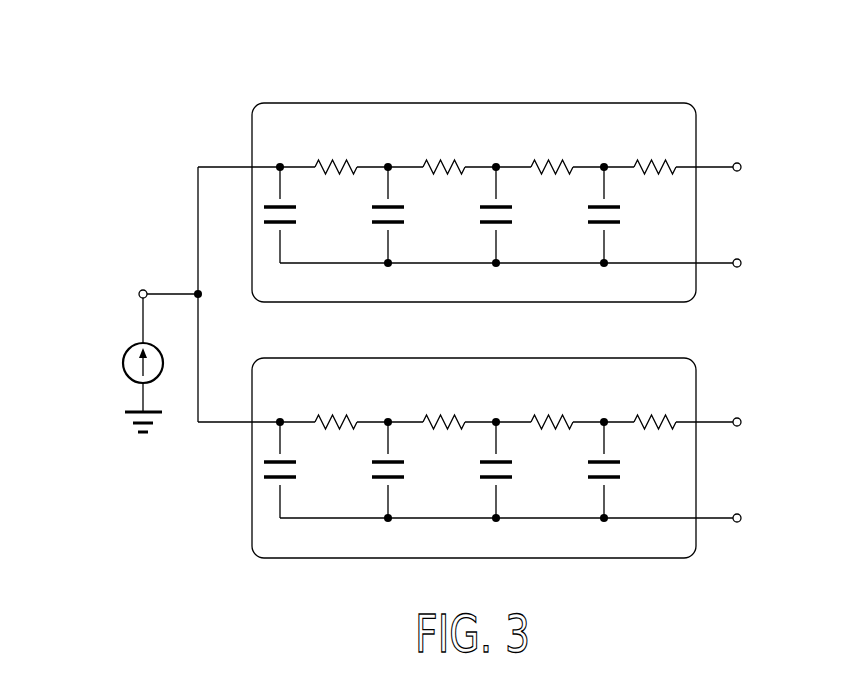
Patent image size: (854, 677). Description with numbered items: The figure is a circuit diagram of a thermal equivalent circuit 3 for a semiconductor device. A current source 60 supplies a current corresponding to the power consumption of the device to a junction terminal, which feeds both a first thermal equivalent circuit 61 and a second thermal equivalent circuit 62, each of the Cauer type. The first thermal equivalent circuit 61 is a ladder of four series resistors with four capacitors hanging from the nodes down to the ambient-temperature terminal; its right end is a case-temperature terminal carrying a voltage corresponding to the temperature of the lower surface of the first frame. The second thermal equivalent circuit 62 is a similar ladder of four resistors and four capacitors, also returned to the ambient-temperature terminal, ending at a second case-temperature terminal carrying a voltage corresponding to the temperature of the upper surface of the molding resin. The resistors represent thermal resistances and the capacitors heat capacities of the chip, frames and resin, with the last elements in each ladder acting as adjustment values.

The thermal equivalent circuit 3 is at (512, 60).
The current source 60 is at (122, 362).
The first thermal equivalent circuit 61 is at (697, 379).
The second thermal equivalent circuit 62 is at (697, 124).